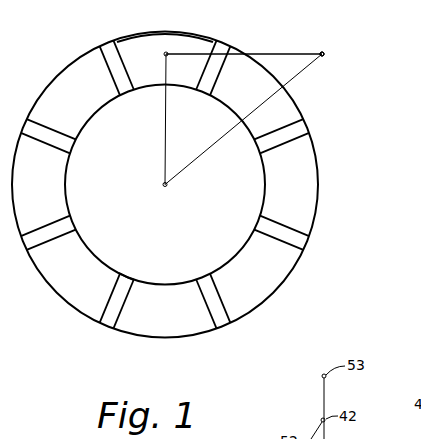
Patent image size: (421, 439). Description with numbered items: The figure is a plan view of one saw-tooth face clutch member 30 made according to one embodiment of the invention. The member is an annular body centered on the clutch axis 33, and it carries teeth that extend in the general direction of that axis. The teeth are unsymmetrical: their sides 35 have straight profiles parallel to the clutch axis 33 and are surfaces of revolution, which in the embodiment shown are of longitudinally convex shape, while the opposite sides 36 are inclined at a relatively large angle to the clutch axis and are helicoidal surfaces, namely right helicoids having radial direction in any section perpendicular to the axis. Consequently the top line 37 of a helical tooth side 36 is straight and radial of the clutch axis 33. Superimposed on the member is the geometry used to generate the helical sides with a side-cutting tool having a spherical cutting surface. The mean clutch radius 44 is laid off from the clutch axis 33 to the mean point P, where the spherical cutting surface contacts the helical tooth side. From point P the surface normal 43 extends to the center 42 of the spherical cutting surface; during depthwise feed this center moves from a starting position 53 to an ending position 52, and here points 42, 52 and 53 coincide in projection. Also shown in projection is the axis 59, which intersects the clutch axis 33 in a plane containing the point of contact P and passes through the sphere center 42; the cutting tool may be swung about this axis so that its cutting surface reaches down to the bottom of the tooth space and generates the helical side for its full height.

The saw-tooth clutch member 30 is at (255, 297).
The clutch axis 33 is at (163, 187).
The tooth sides 35 is at (116, 82).
The helical tooth sides 36 is at (157, 40).
The top line of helical tooth side 37 is at (116, 278).
The center of spherical cutting surface 42 is at (324, 56).
The surface normal 43 is at (270, 54).
The mean clutch radius 44 is at (166, 133).
The end position of sphere center 52 is at (322, 54).
The start position of sphere center 53 is at (322, 54).
The swing axis 59 is at (205, 150).
The mean point P is at (168, 56).